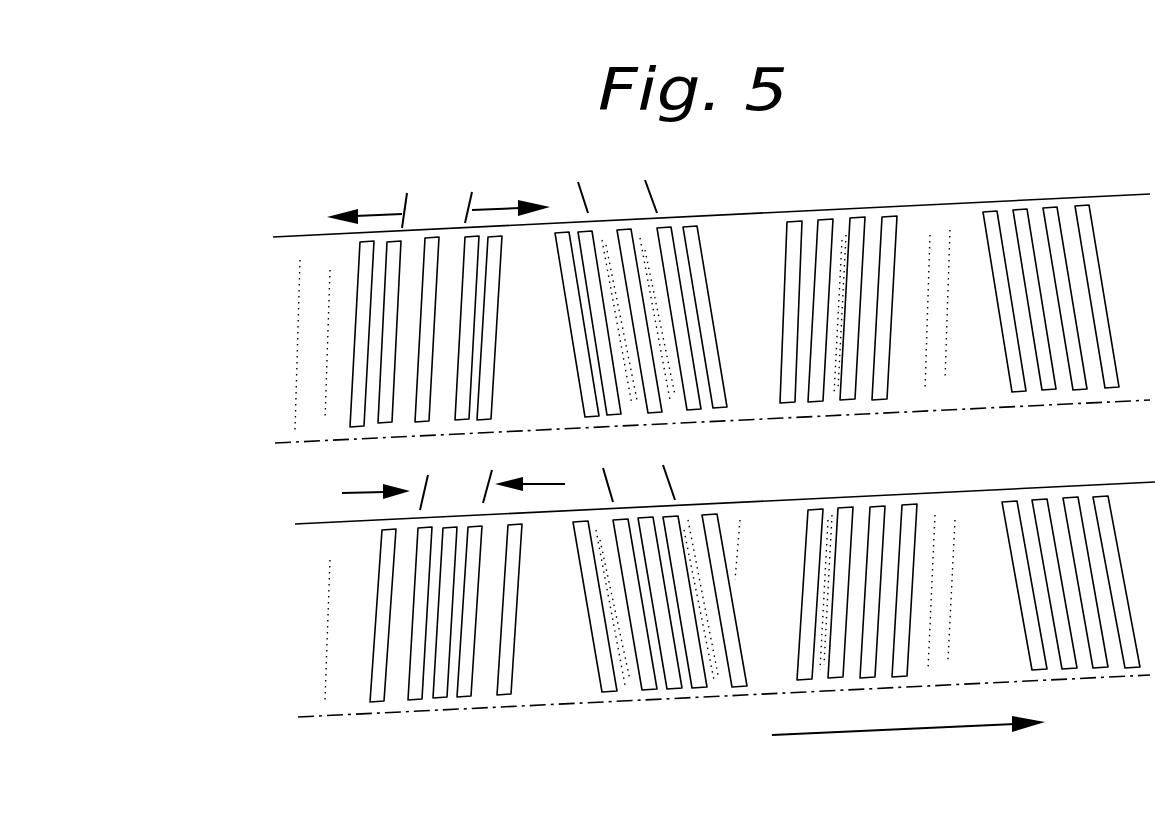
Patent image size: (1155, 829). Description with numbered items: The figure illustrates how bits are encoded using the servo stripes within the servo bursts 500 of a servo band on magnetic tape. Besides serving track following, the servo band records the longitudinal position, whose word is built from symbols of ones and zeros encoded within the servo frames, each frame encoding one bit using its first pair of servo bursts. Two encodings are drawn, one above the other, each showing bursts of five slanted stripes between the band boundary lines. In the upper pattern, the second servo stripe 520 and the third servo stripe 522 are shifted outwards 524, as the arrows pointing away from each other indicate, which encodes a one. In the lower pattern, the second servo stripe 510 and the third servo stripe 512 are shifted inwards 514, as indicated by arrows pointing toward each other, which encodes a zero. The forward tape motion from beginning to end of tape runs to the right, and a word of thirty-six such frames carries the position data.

The servo bursts 500 is at (207, 130).
The servo stripe 2 510 is at (408, 702).
The servo stripe 3 512 is at (463, 703).
The inward shift 514 is at (366, 503).
The servo stripe 2 520 is at (378, 428).
The servo stripe 3 522 is at (465, 428).
The outward shift 524 is at (427, 198).